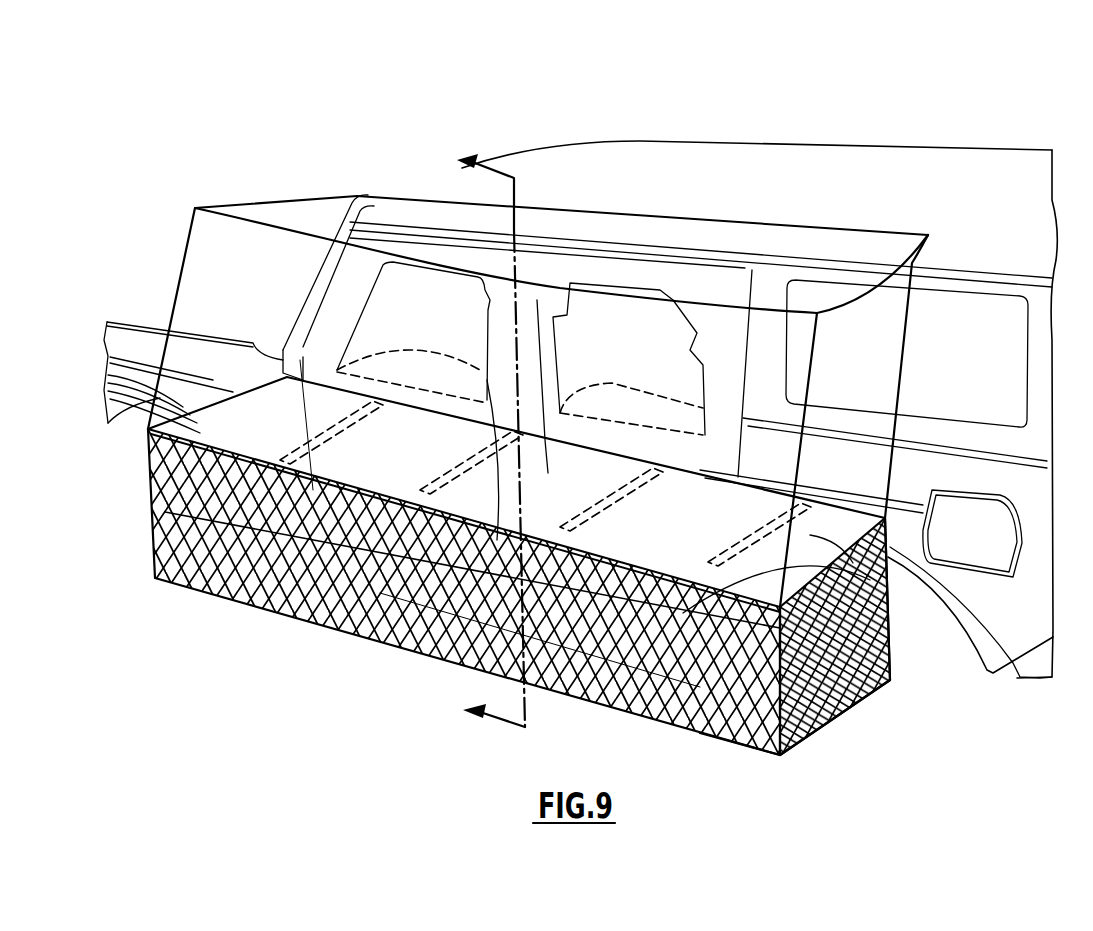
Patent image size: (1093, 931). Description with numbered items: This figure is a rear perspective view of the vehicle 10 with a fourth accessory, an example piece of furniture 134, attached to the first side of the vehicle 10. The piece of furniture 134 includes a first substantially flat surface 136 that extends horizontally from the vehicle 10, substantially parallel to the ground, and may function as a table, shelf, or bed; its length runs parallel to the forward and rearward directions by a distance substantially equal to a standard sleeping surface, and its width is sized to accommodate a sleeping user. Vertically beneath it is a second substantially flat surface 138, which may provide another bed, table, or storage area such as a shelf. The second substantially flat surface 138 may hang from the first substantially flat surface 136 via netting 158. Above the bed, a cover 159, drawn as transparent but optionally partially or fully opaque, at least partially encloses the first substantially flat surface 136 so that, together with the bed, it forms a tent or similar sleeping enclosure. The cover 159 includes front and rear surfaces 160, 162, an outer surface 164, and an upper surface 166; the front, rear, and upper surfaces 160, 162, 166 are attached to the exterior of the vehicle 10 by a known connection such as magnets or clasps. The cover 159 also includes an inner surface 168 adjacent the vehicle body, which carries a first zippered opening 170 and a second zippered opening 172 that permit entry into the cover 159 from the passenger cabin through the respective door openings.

The vehicle 10 is at (771, 64).
The piece of furniture 134 is at (778, 210).
The first substantially flat surface 136 is at (873, 697).
The second substantially flat surface 138 is at (792, 727).
The netting 158 is at (178, 524).
The cover 159 is at (868, 247).
The front surface 160 is at (178, 262).
The rear surface 162 is at (878, 423).
The outer surface 164 is at (167, 349).
The upper surface 166 is at (622, 233).
The inner surface 168 is at (567, 273).
The first zippered opening 170 is at (420, 365).
The second zippered opening 172 is at (621, 403).